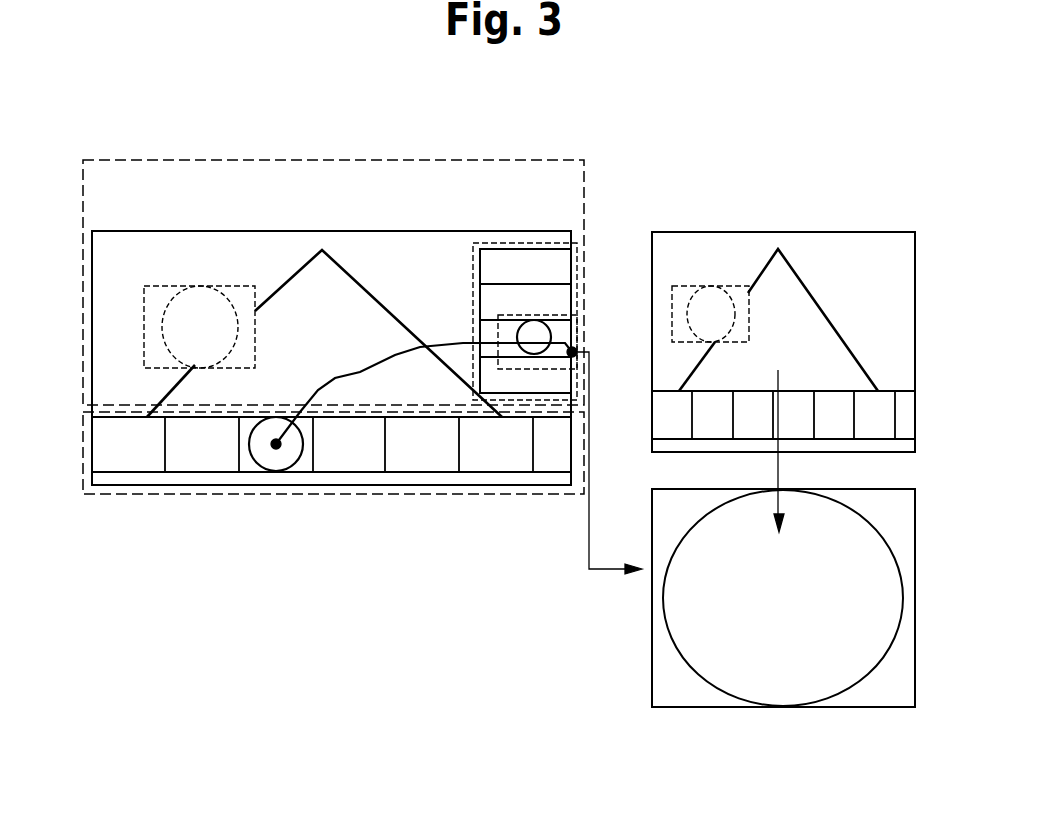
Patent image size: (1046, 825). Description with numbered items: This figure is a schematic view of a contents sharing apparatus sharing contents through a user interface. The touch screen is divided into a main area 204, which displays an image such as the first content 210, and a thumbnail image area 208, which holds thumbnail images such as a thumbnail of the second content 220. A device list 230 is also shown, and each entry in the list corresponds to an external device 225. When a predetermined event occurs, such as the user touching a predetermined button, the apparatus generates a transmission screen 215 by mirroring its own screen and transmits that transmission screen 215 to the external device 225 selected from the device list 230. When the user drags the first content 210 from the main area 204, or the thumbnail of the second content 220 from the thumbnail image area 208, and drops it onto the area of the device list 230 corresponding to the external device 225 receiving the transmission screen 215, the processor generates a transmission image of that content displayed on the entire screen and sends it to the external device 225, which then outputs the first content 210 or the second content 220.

The main area 204 is at (341, 160).
The thumbnail image area 208 is at (341, 495).
The first content 210 is at (200, 286).
The transmission screen 215 is at (831, 232).
The second content 220 is at (260, 472).
The external device 225 is at (853, 707).
The device list 230 is at (523, 243).